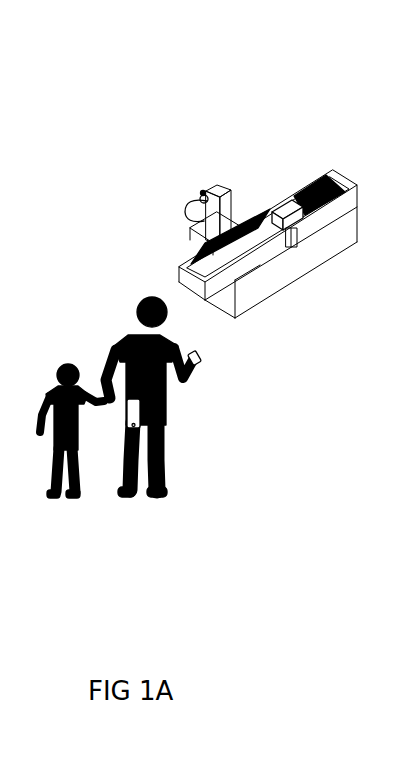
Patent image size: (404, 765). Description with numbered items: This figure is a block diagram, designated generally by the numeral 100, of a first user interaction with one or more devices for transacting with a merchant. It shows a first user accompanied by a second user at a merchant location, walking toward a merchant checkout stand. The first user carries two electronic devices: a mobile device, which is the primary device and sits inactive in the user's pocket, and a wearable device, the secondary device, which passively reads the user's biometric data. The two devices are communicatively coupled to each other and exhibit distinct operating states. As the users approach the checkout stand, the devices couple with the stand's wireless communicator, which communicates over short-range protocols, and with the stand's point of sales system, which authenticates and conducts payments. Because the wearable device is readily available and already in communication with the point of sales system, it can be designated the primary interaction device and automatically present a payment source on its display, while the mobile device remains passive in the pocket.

The system 100 is at (311, 80).